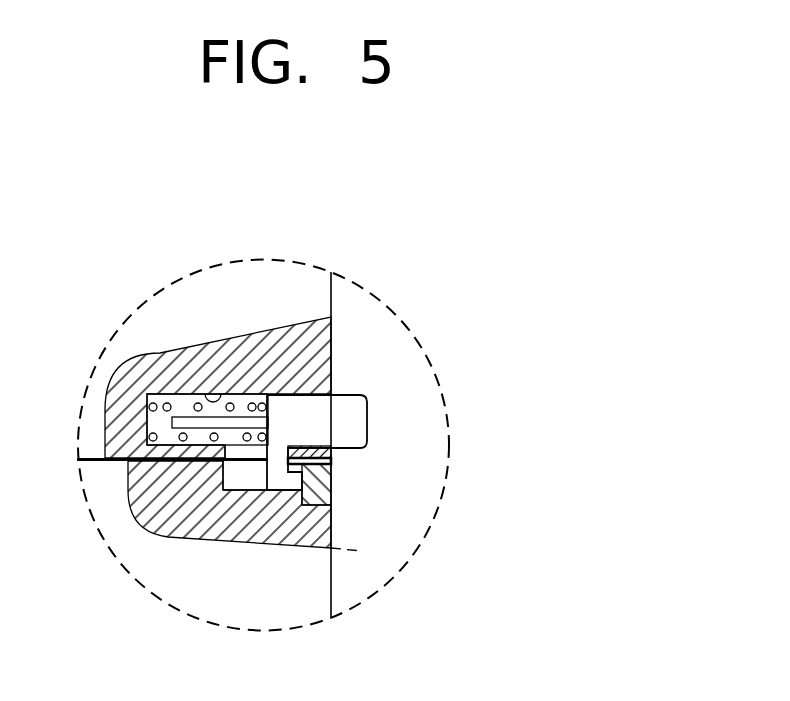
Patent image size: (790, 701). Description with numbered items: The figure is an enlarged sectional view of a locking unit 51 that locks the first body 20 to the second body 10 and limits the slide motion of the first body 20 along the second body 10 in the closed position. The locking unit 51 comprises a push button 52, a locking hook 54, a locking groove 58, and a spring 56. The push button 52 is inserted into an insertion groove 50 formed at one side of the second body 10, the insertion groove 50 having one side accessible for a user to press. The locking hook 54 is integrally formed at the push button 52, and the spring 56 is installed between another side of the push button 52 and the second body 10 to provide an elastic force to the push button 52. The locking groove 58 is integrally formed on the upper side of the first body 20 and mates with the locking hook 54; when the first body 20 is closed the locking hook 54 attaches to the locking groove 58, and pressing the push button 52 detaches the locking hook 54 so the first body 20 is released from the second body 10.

The second body 10 is at (180, 312).
The first body 20 is at (165, 570).
The insertion groove 50 is at (227, 394).
The locking unit 51 is at (395, 275).
The push button 52 is at (360, 422).
The locking hook 54 is at (293, 480).
The spring 56 is at (164, 405).
The locking groove 58 is at (327, 465).